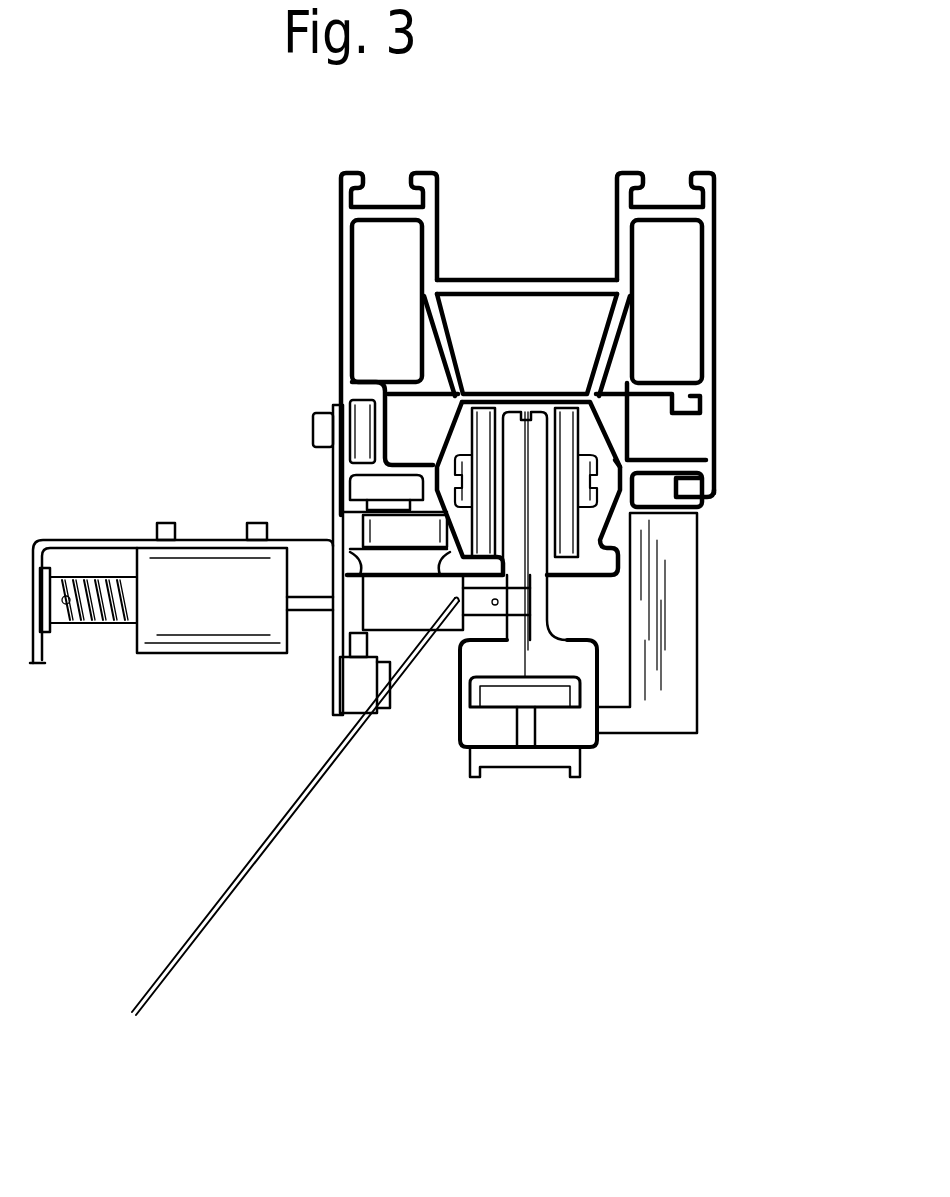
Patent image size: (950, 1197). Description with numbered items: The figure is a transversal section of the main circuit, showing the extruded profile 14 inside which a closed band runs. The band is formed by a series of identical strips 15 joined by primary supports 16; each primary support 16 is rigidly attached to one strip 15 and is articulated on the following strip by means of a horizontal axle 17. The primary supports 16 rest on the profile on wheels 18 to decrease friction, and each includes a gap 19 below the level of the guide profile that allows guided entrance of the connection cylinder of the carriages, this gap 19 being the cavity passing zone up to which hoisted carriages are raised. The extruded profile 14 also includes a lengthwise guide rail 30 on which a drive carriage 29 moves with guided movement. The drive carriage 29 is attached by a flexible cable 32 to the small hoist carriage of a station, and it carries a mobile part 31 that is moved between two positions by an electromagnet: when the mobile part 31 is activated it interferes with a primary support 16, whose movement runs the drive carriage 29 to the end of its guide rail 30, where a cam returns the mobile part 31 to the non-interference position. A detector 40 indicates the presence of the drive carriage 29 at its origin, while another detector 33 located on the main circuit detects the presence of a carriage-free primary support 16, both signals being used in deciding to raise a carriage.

The extruded profile 14 is at (729, 258).
The strip 15 is at (548, 529).
The primary support 16 is at (558, 741).
The horizontal axle 17 is at (615, 469).
The wheel 18 is at (581, 420).
The gap 19 is at (558, 690).
The drive carriage 29 is at (393, 610).
The lengthwise guide rail 30 is at (345, 513).
The mobile part 31 is at (530, 600).
The flexible cable 32 is at (226, 860).
The detector 33 is at (685, 645).
The detector 40 is at (349, 712).